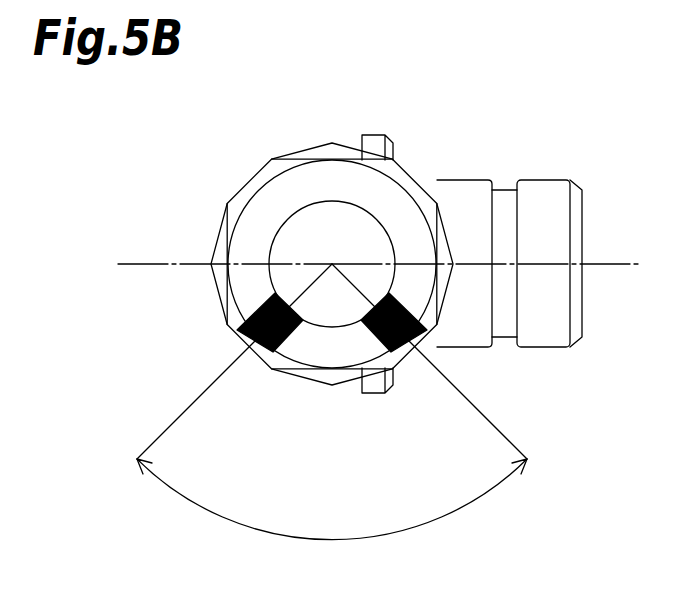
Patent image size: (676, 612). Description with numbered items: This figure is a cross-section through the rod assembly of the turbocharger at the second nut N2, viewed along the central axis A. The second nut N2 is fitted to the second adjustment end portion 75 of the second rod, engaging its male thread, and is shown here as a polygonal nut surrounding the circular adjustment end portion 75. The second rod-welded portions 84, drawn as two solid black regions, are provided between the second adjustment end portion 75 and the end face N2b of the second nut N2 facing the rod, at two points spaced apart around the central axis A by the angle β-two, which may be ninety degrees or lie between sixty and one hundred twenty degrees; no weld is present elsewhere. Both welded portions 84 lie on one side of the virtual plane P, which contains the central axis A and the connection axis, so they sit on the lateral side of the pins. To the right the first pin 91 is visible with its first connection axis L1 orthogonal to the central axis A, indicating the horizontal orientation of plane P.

The second adjustment end portion 75 is at (350, 233).
The first pin 91 is at (548, 178).
The second rod-welded portions 84 is at (272, 353).
The central axis A is at (332, 264).
The virtual plane P is at (160, 262).
The first connection axis L1 is at (612, 263).
The second nut N2 is at (213, 300).
The end face of the second nut N2b is at (335, 350).